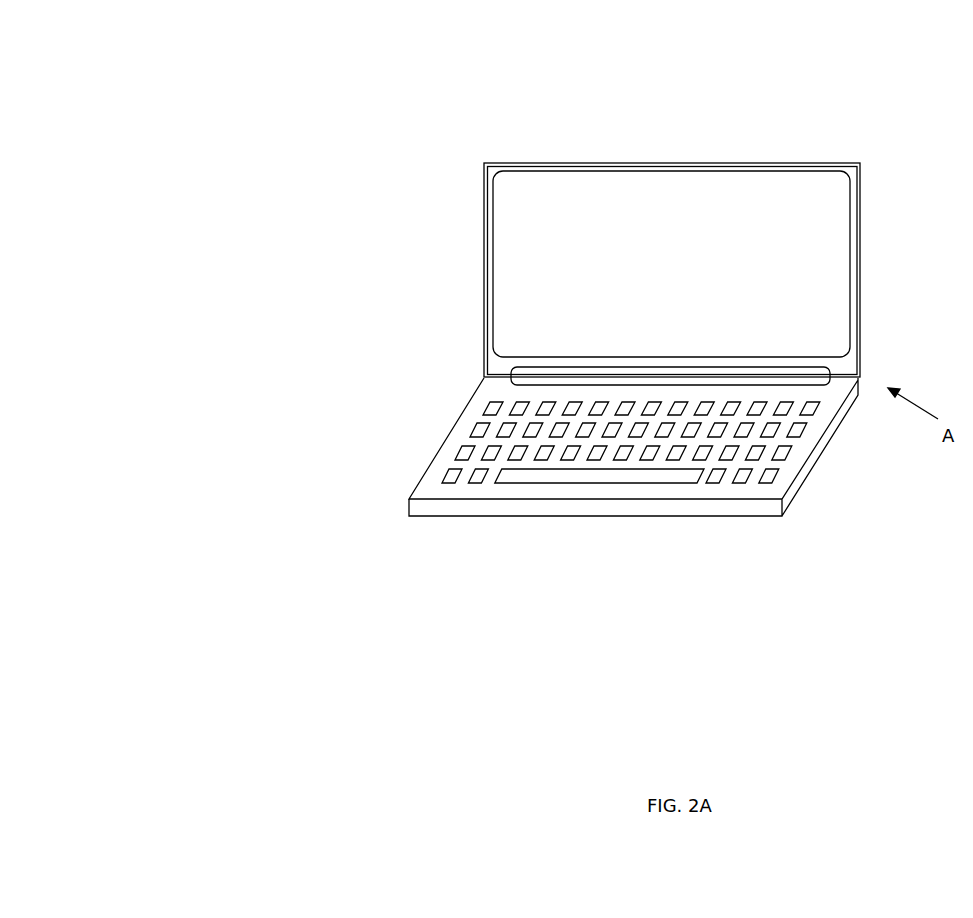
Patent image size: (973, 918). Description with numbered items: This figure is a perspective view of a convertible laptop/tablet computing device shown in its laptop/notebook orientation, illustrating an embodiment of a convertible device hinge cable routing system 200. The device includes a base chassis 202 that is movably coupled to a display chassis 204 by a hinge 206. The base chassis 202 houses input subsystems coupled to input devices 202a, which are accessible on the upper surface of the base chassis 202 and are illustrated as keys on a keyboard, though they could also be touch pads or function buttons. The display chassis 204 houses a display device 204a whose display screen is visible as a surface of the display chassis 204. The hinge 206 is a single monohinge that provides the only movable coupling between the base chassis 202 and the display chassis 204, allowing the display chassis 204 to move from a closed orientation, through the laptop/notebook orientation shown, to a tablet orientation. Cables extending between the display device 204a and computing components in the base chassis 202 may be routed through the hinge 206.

The convertible device hinge cable routing system 200 is at (188, 98).
The base chassis 202 is at (782, 516).
The input devices 202a is at (597, 475).
The display chassis 204 is at (860, 163).
The display device 204a is at (617, 255).
The hinge 206 is at (668, 378).